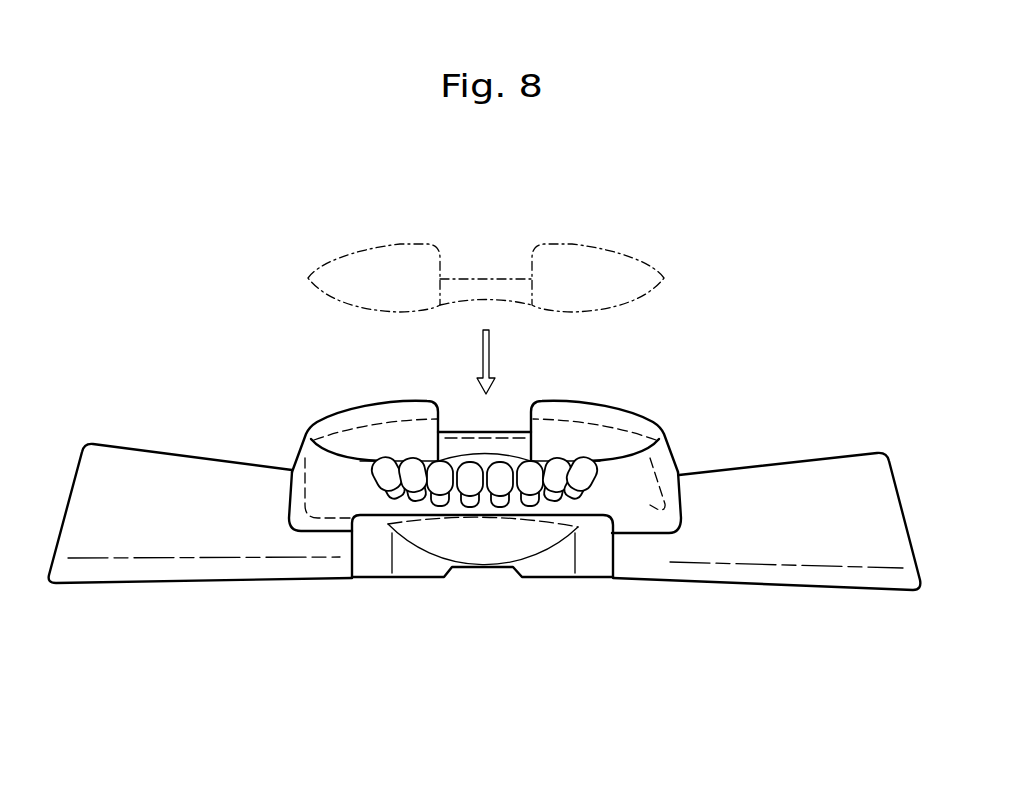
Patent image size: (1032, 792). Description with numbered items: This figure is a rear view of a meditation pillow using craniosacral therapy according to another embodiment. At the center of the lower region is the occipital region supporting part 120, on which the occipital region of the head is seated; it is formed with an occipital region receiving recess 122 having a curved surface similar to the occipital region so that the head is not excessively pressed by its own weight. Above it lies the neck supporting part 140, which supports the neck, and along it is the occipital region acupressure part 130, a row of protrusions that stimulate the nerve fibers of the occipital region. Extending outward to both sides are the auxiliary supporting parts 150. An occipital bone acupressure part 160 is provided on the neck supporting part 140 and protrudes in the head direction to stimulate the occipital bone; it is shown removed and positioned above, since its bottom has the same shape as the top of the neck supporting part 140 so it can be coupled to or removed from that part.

The occipital region supporting part 120 is at (555, 570).
The occipital region receiving recess 122 is at (418, 537).
The occipital region acupressure part 130 is at (389, 460).
The neck supporting part 140 is at (667, 525).
The auxiliary supporting parts 150 is at (137, 567).
The occipital bone acupressure part 160 is at (613, 258).